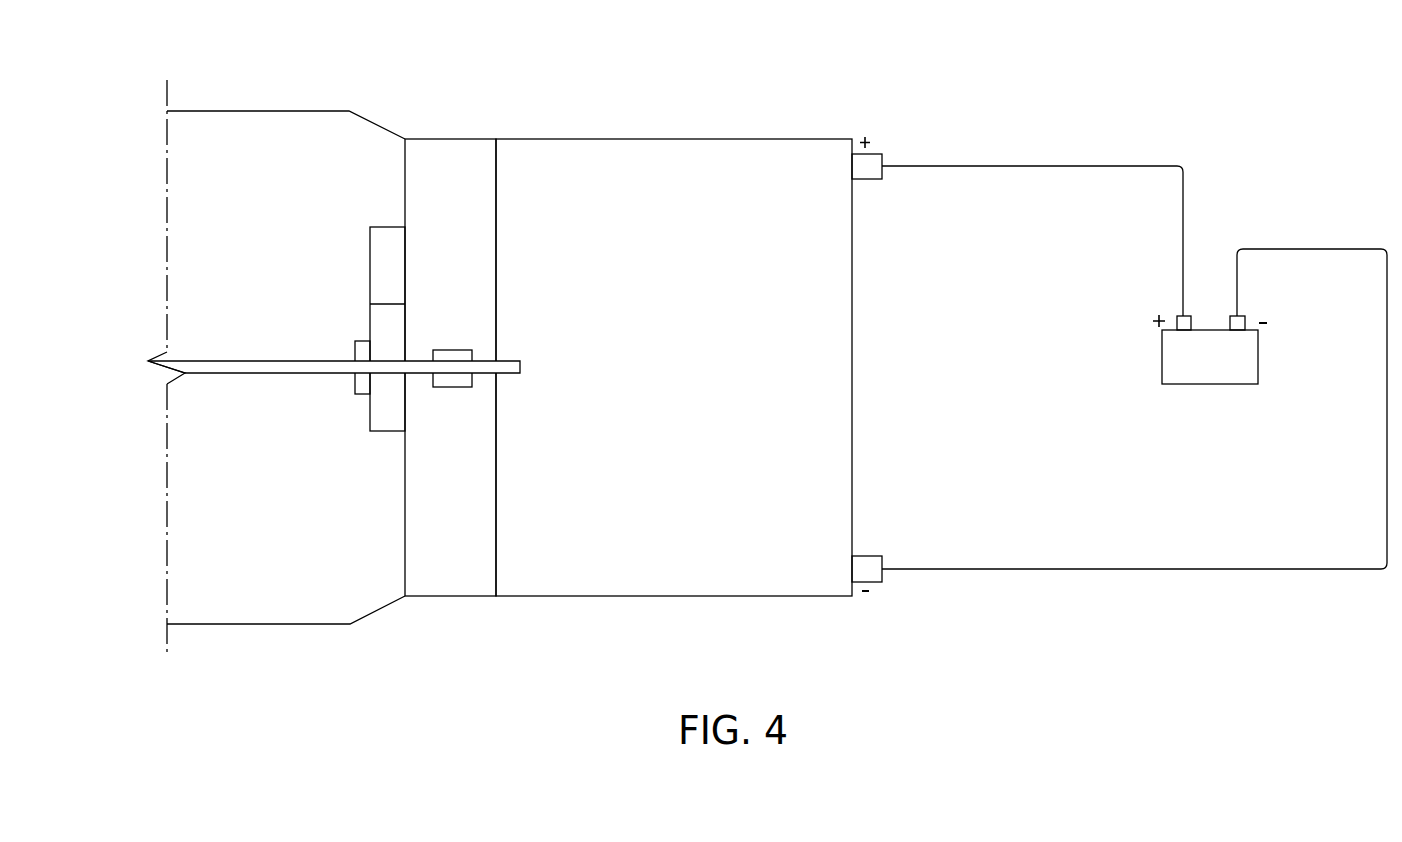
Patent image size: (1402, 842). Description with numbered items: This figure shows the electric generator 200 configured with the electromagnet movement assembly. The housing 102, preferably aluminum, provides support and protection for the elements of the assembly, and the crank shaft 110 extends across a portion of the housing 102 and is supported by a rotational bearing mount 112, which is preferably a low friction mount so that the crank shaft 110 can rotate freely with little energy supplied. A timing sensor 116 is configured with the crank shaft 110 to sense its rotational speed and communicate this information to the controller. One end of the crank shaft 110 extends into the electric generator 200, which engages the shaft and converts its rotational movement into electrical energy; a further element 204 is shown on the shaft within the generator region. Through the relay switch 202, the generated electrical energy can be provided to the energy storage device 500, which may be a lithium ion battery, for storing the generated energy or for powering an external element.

The housing 102 is at (257, 111).
The crank shaft 110 is at (230, 361).
The rotational bearing mount 112 is at (365, 341).
The timing sensor 116 is at (390, 227).
The electric generator 200 is at (677, 139).
The relay switch 202 is at (442, 139).
The bushing 204 is at (452, 350).
The energy storage device 500 is at (1258, 355).